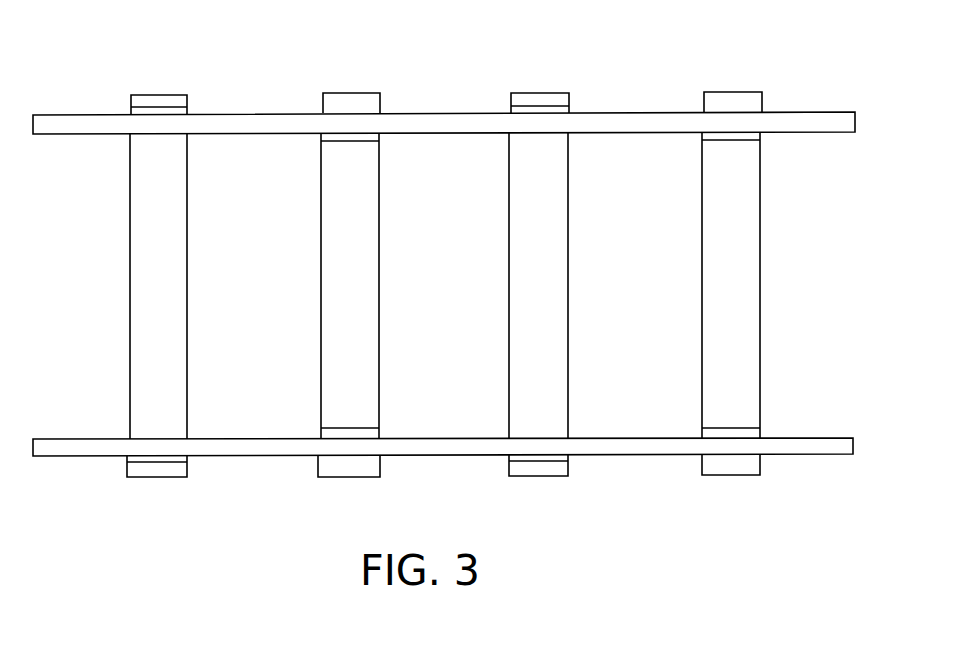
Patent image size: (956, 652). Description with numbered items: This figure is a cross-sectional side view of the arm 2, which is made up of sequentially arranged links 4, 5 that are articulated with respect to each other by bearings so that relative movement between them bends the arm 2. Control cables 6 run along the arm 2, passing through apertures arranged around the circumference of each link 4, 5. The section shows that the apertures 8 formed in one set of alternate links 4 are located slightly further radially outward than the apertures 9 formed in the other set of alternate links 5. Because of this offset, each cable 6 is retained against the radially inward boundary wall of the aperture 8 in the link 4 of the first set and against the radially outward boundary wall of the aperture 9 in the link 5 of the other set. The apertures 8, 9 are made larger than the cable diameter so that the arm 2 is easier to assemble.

The arm 2 is at (458, 77).
The link 4 is at (146, 284).
The link 5 is at (353, 300).
The control cable 6 is at (245, 112).
The aperture 8 is at (128, 113).
The aperture 9 is at (378, 133).